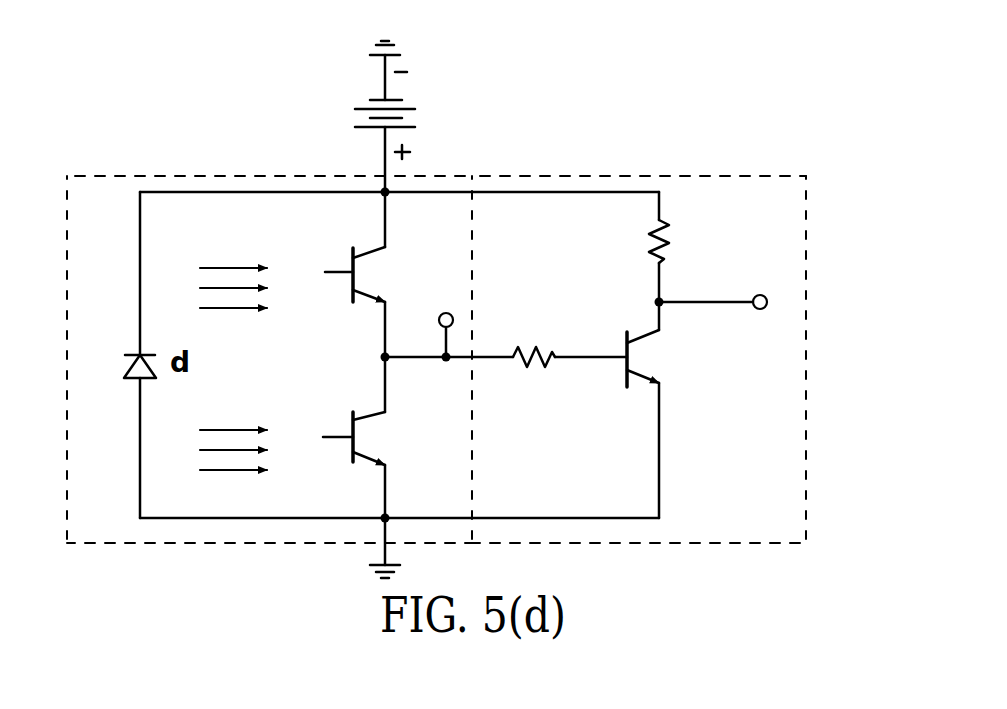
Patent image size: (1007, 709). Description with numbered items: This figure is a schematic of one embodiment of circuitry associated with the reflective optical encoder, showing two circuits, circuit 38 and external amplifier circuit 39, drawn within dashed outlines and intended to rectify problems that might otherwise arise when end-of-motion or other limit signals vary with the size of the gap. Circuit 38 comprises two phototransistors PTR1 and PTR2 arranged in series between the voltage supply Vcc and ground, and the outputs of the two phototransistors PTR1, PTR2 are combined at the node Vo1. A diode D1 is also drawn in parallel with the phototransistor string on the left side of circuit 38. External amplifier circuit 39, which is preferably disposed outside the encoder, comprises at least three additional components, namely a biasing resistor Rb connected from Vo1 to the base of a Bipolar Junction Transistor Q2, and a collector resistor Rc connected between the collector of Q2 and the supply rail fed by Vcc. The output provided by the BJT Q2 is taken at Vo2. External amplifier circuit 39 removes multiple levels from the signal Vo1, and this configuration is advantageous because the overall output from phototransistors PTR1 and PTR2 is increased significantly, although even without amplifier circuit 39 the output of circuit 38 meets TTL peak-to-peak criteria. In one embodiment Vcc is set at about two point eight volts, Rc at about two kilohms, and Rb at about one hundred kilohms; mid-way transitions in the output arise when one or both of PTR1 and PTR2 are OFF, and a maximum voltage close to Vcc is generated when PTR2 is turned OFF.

The circuit 38 is at (118, 176).
The external amplifier circuit 39 is at (760, 176).
The voltage supply Vcc is at (357, 116).
The output signal Vo1 is at (475, 334).
The output Vo2 is at (749, 284).
The diode D1 is at (118, 365).
The phototransistor PTR1 is at (353, 259).
The phototransistor PTR2 is at (357, 432).
The biasing resistor Rb is at (539, 381).
The collector resistor Rc is at (636, 244).
The Bipolar Junction Transistor Q2 is at (687, 355).